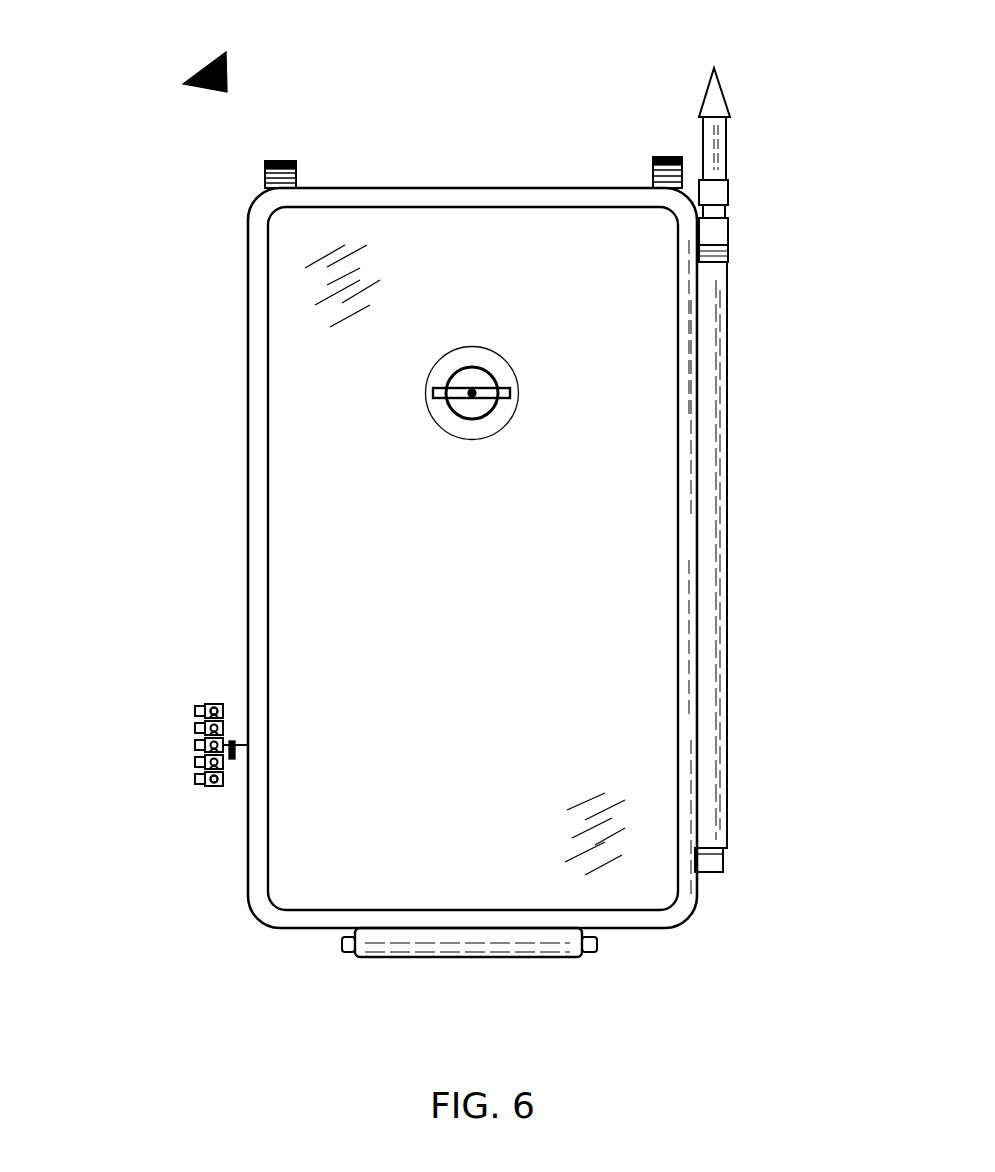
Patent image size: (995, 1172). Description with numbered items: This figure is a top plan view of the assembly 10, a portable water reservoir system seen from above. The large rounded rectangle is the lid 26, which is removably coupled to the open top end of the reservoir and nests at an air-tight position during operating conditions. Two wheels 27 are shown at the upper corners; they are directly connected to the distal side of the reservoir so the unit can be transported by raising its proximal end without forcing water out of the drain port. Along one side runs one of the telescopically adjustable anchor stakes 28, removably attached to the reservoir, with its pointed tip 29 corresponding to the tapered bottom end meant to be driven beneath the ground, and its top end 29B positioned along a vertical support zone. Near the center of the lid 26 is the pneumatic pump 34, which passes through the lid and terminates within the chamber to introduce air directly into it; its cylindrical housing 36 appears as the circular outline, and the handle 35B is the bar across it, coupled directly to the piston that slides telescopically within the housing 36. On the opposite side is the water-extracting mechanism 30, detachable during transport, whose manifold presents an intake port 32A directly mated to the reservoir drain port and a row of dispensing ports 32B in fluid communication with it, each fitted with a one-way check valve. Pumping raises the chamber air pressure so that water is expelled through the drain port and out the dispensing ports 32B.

The assembly 10 is at (200, 72).
The lid 26 is at (481, 195).
The wheels 27 is at (296, 160).
The telescopically adjustable anchor stakes 28 is at (707, 643).
The antenna tip 29 is at (715, 93).
The top ends 29B is at (708, 858).
The water-extracting mechanism 30 is at (206, 692).
The intake port 32A is at (237, 762).
The dispensing ports 32B is at (195, 743).
The pneumatic pump 34 is at (443, 415).
The handle 35B is at (507, 388).
The cylindrical housing 36 is at (472, 370).